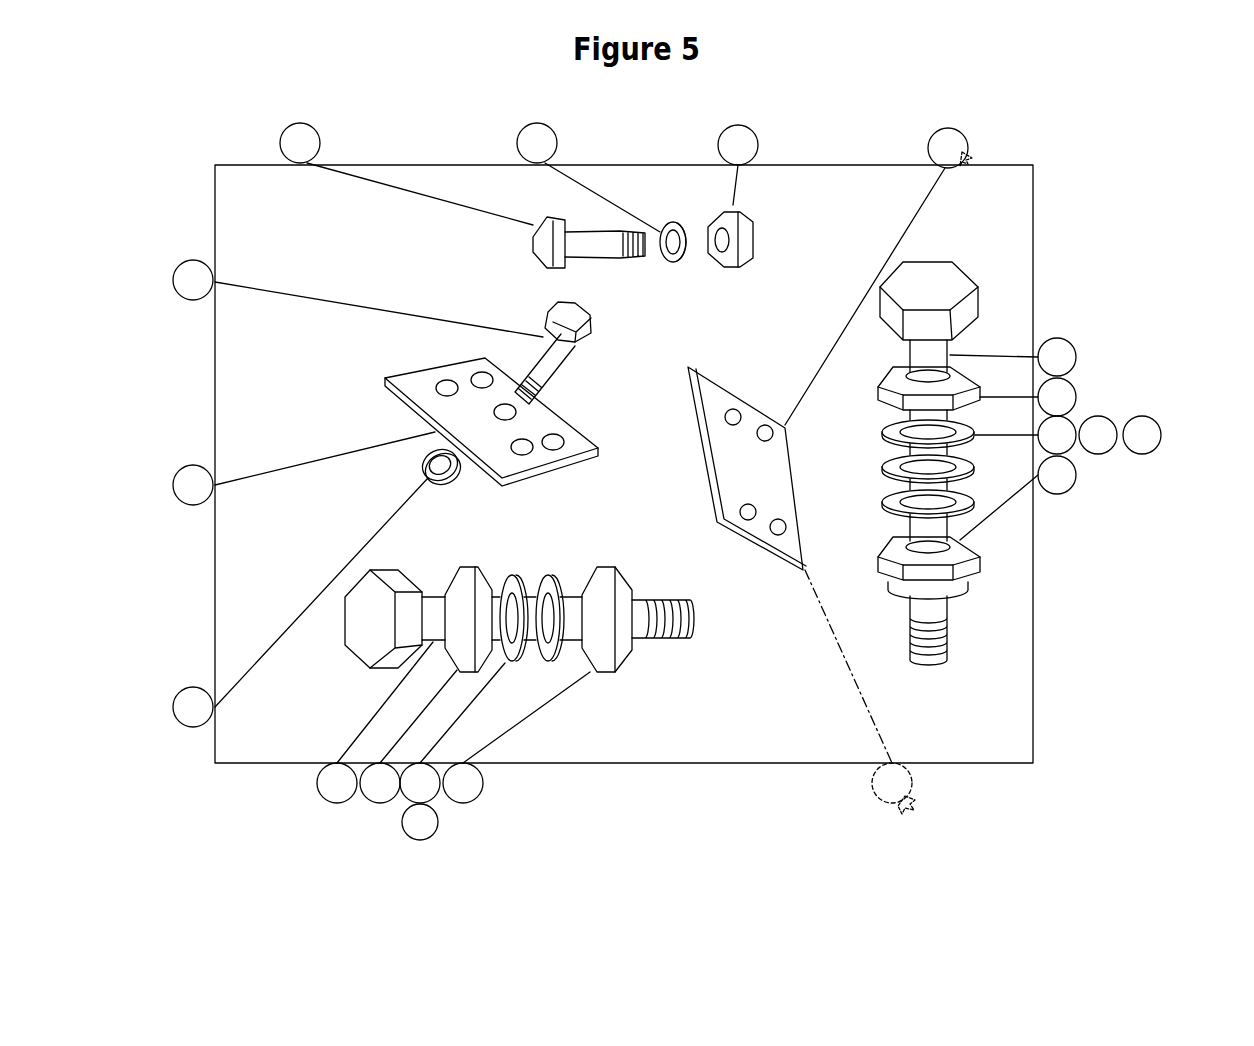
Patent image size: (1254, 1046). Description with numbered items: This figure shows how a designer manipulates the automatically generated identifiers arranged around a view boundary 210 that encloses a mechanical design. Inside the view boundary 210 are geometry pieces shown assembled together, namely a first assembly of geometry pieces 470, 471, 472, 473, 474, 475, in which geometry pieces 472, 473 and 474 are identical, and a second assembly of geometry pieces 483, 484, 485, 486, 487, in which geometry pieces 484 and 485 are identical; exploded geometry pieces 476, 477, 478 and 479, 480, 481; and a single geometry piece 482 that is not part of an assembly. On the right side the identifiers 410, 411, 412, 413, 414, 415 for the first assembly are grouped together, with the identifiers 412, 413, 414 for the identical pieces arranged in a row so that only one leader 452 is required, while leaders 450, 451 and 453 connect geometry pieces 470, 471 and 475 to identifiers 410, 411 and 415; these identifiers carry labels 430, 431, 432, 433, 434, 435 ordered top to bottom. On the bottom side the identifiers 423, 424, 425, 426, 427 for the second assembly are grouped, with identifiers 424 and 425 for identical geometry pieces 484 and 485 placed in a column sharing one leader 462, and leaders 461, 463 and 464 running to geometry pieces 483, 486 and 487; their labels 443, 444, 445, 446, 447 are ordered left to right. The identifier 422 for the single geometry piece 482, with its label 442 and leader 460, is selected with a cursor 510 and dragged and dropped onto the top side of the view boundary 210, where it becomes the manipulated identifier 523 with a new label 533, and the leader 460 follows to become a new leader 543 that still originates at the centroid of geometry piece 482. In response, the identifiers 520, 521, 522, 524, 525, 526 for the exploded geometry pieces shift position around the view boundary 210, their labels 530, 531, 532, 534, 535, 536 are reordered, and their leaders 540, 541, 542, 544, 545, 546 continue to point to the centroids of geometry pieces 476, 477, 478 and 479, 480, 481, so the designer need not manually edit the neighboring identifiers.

The view boundary 210 is at (1033, 705).
The identifier 410 is at (1092, 341).
The identifier 411 is at (1116, 378).
The identifier 412 is at (1082, 438).
The identifier 413 is at (1142, 447).
The identifier 414 is at (1166, 445).
The identifier 415 is at (1089, 494).
The identifier 422 is at (930, 802).
The identifier 423 is at (466, 826).
The identifier 424 is at (410, 860).
The identifier 425 is at (430, 860).
The identifier 426 is at (359, 817).
The identifier 427 is at (301, 803).
The label 430 is at (1075, 350).
The label 431 is at (1080, 395).
The label 432 is at (1075, 438).
The label 433 is at (1120, 445).
The label 434 is at (1162, 440).
The label 435 is at (1080, 478).
The label 442 is at (912, 780).
The label 443 is at (483, 783).
The label 444 is at (450, 845).
The label 445 is at (420, 845).
The label 446 is at (375, 800).
The label 447 is at (322, 800).
The leader 450 is at (972, 343).
The leader 451 is at (1008, 395).
The leader 452 is at (1010, 435).
The leader 453 is at (1010, 520).
The leader 460 is at (838, 665).
The leader 461 is at (590, 700).
The leader 462 is at (500, 675).
The leader 463 is at (445, 690).
The leader 464 is at (350, 700).
The geometry piece 470 is at (955, 268).
The geometry piece 471 is at (875, 390).
The geometry piece 472 is at (880, 432).
The geometry piece 473 is at (880, 467).
The geometry piece 474 is at (885, 508).
The geometry piece 475 is at (880, 590).
The geometry piece 476 is at (587, 343).
The geometry piece 477 is at (565, 473).
The geometry piece 478 is at (430, 483).
The geometry piece 479 is at (728, 268).
The geometry piece 480 is at (670, 262).
The geometry piece 481 is at (600, 268).
The geometry piece 482 is at (740, 548).
The geometry piece 483 is at (615, 570).
The geometry piece 484 is at (552, 575).
The geometry piece 485 is at (512, 575).
The geometry piece 486 is at (492, 575).
The geometry piece 487 is at (430, 578).
The cursor 510 is at (975, 155).
The identifier 520 is at (156, 263).
The identifier 521 is at (156, 468).
The identifier 522 is at (156, 690).
The manipulated identifier 523 is at (983, 466).
The identifier 524 is at (776, 129).
The identifier 525 is at (574, 128).
The identifier 526 is at (337, 128).
The indicator connector 530 is at (185, 250).
The indicator connector 531 is at (185, 452).
The indicator connector 532 is at (185, 675).
The new label 533 is at (983, 479).
The indicator connector 534 is at (758, 145).
The indicator connector 535 is at (557, 143).
The indicator connector 536 is at (320, 143).
The leader 540 is at (318, 300).
The leader 541 is at (325, 445).
The leader 542 is at (330, 580).
The new leader 543 is at (805, 385).
The leader 544 is at (745, 200).
The leader 545 is at (600, 205).
The leader 546 is at (478, 205).